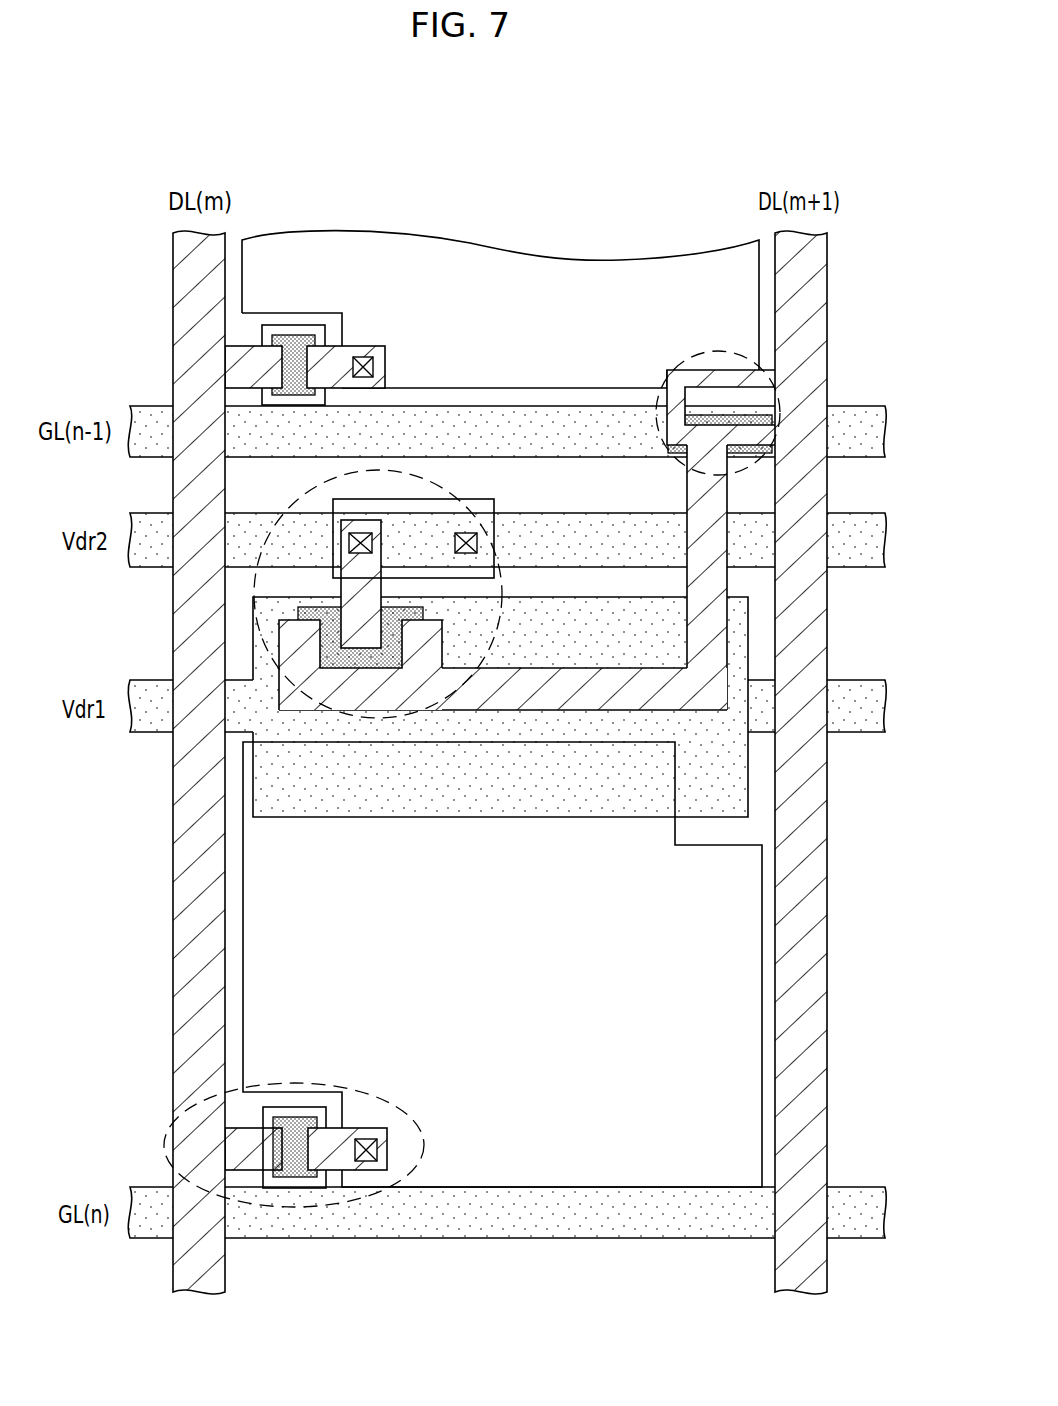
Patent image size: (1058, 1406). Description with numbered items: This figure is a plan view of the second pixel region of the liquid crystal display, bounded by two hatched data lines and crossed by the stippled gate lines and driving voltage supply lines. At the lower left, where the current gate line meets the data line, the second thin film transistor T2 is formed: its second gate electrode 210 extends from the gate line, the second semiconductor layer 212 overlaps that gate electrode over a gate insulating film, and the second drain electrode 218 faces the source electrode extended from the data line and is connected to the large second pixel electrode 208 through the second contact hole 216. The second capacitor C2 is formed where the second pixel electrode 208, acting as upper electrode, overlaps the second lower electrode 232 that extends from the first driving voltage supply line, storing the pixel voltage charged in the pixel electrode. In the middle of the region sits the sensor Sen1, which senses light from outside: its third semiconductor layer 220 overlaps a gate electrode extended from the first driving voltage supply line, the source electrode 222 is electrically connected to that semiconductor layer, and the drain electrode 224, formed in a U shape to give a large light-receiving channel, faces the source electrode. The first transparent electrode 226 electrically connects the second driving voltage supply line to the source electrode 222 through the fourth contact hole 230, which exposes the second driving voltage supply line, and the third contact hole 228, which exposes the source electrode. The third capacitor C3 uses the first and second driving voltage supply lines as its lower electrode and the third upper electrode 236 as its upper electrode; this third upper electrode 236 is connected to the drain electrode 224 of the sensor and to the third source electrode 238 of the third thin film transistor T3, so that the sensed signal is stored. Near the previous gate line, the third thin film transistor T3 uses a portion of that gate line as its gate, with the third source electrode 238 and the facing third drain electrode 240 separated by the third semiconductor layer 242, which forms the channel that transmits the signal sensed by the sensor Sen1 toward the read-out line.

The second pixel electrode 208 is at (693, 1018).
The second gate electrode 210 is at (303, 1113).
The second semiconductor layer 212 is at (308, 1120).
The second contact hole 216 is at (378, 1150).
The second drain electrode 218 is at (368, 1170).
The third semiconductor layer 220 is at (420, 607).
The source electrode 222 is at (345, 590).
The drain electrode 224 is at (333, 683).
The first transparent electrode 226 is at (460, 500).
The third contact hole 228 is at (350, 542).
The fourth contact hole 230 is at (466, 533).
The second lower electrode 232 is at (308, 817).
The third upper electrode 236 is at (593, 677).
The third source electrode 238 is at (690, 500).
The third drain electrode 240 is at (720, 395).
The third semiconductor layer 242 is at (672, 425).
The sensor Sen1 is at (385, 472).
The second thin film transistor T2 is at (410, 1126).
The third thin film transistor T3 is at (684, 358).
The second capacitor C2 is at (463, 830).
The third capacitor C3 is at (765, 618).